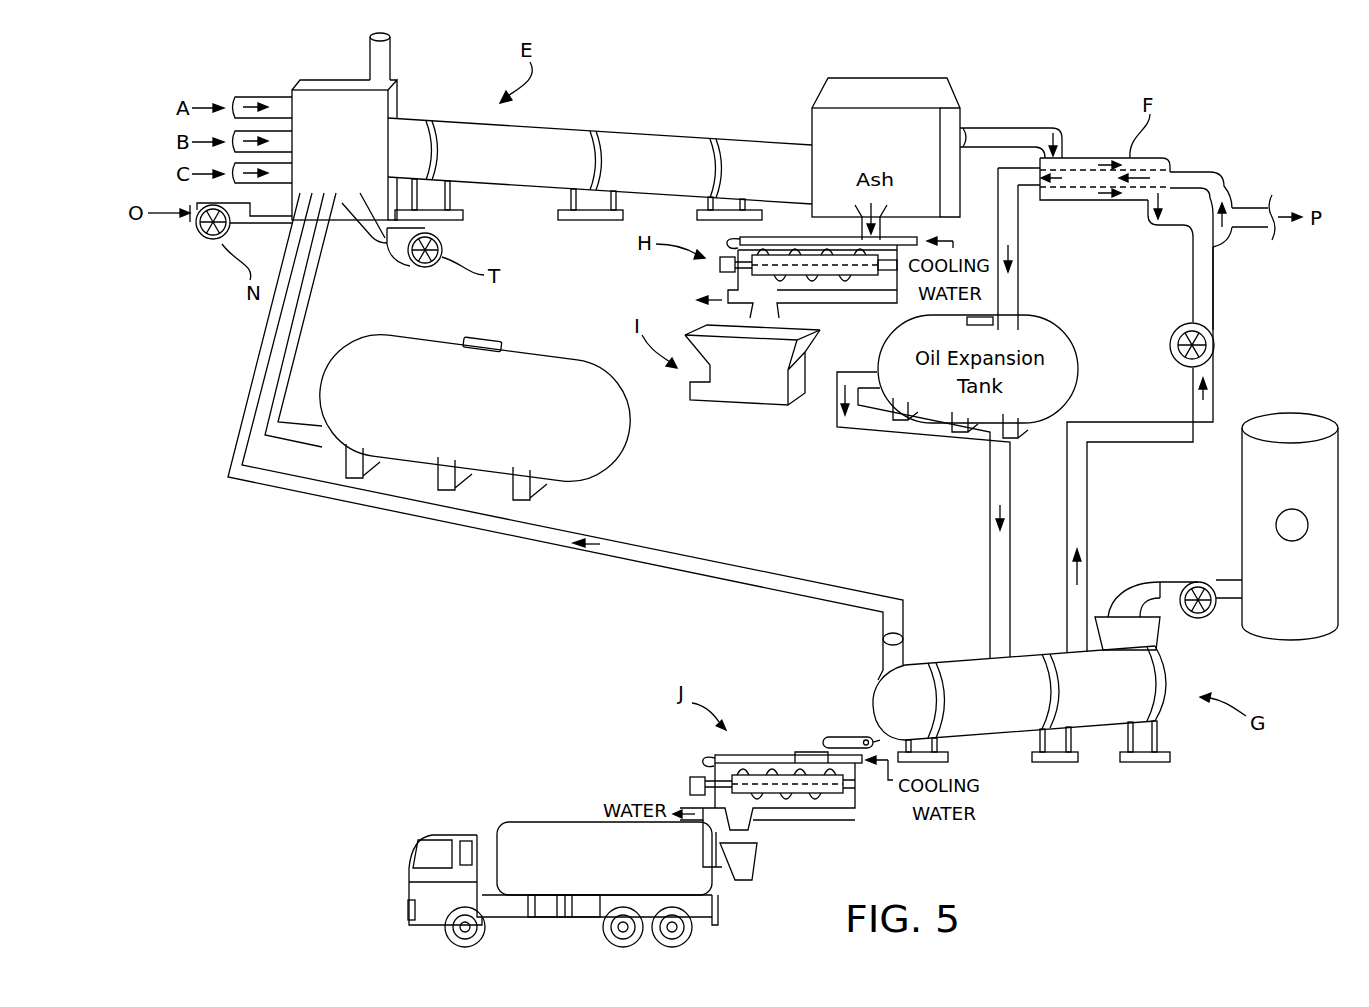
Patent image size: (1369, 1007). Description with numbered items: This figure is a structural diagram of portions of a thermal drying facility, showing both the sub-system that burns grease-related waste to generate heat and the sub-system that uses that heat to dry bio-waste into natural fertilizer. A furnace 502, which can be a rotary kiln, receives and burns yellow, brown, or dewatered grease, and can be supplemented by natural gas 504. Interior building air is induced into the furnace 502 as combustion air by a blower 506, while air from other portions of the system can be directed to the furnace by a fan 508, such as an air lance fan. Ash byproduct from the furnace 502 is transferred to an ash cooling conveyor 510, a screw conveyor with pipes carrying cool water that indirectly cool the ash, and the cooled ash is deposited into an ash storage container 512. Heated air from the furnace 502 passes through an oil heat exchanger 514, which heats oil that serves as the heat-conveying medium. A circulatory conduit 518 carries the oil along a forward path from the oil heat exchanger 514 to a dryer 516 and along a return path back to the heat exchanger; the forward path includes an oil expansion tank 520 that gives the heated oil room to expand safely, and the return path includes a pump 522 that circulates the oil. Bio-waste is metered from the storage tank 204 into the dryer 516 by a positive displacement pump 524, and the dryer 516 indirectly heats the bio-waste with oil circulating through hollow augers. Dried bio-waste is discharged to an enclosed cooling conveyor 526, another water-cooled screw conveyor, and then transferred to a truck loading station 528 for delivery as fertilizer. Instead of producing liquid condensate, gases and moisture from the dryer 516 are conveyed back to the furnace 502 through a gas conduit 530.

The furnace 502 is at (442, 118).
The natural gas 504 is at (557, 348).
The blower 506 is at (412, 264).
The fan 508 is at (205, 240).
The ash cooling conveyor 510 is at (868, 303).
The ash storage container 512 is at (740, 405).
The oil heat exchanger 514 is at (1098, 158).
The dryer 516 is at (1175, 672).
The circulatory conduit 518 is at (1110, 420).
The oil expansion tank 520 is at (1045, 432).
The pump 522 is at (1215, 328).
The positive displacement pump 524 is at (1170, 580).
The cooling conveyor 526 is at (763, 754).
The truck loading station 528 is at (520, 822).
The gas conduit 530 is at (538, 545).
The storage tank 204 is at (1290, 414).